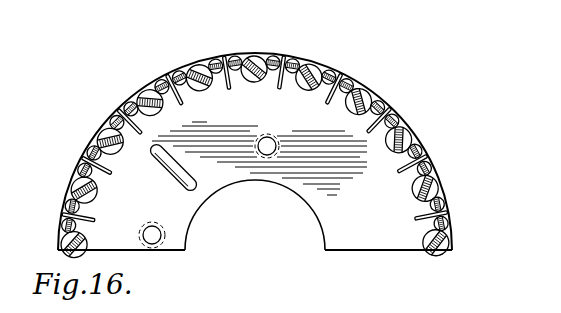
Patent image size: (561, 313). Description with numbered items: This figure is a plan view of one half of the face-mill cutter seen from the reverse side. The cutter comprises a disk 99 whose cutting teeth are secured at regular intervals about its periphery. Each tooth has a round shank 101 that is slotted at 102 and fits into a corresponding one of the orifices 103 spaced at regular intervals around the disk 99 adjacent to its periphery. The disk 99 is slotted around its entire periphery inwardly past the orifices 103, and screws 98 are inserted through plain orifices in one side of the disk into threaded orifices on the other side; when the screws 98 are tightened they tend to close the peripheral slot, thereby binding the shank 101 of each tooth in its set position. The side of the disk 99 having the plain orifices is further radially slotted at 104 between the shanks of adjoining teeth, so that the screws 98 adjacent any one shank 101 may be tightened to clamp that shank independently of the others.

The screws 98 is at (291, 66).
The disk 99 is at (408, 237).
The round shanks 101 is at (406, 126).
The slot 102 is at (429, 180).
The orifices 103 is at (345, 80).
The radial slots 104 is at (221, 54).